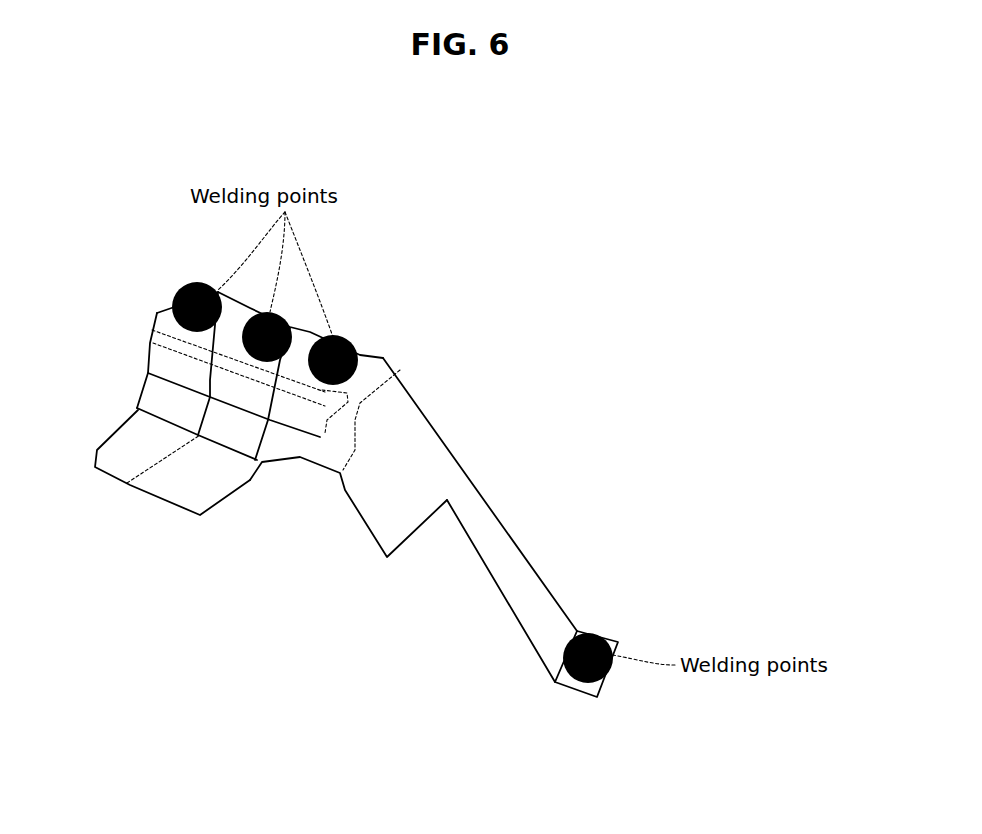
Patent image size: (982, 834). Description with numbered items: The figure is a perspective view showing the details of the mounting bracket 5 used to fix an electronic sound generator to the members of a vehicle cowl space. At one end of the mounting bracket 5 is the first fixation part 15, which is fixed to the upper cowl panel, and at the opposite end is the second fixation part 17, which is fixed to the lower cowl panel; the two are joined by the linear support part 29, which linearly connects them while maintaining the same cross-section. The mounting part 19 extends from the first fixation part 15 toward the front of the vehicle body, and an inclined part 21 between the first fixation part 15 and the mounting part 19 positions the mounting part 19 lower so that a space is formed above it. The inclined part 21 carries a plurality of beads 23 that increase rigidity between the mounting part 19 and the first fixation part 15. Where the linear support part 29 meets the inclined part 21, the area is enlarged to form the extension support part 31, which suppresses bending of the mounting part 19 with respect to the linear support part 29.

The mounting bracket 5 is at (388, 350).
The first fixation part 15 is at (150, 316).
The second fixation part 17 is at (567, 703).
The mounting part 19 is at (127, 408).
The inclined part 21 is at (145, 358).
The beads 23 is at (170, 358).
The linear support part 29 is at (423, 373).
The extension support part 31 is at (393, 540).